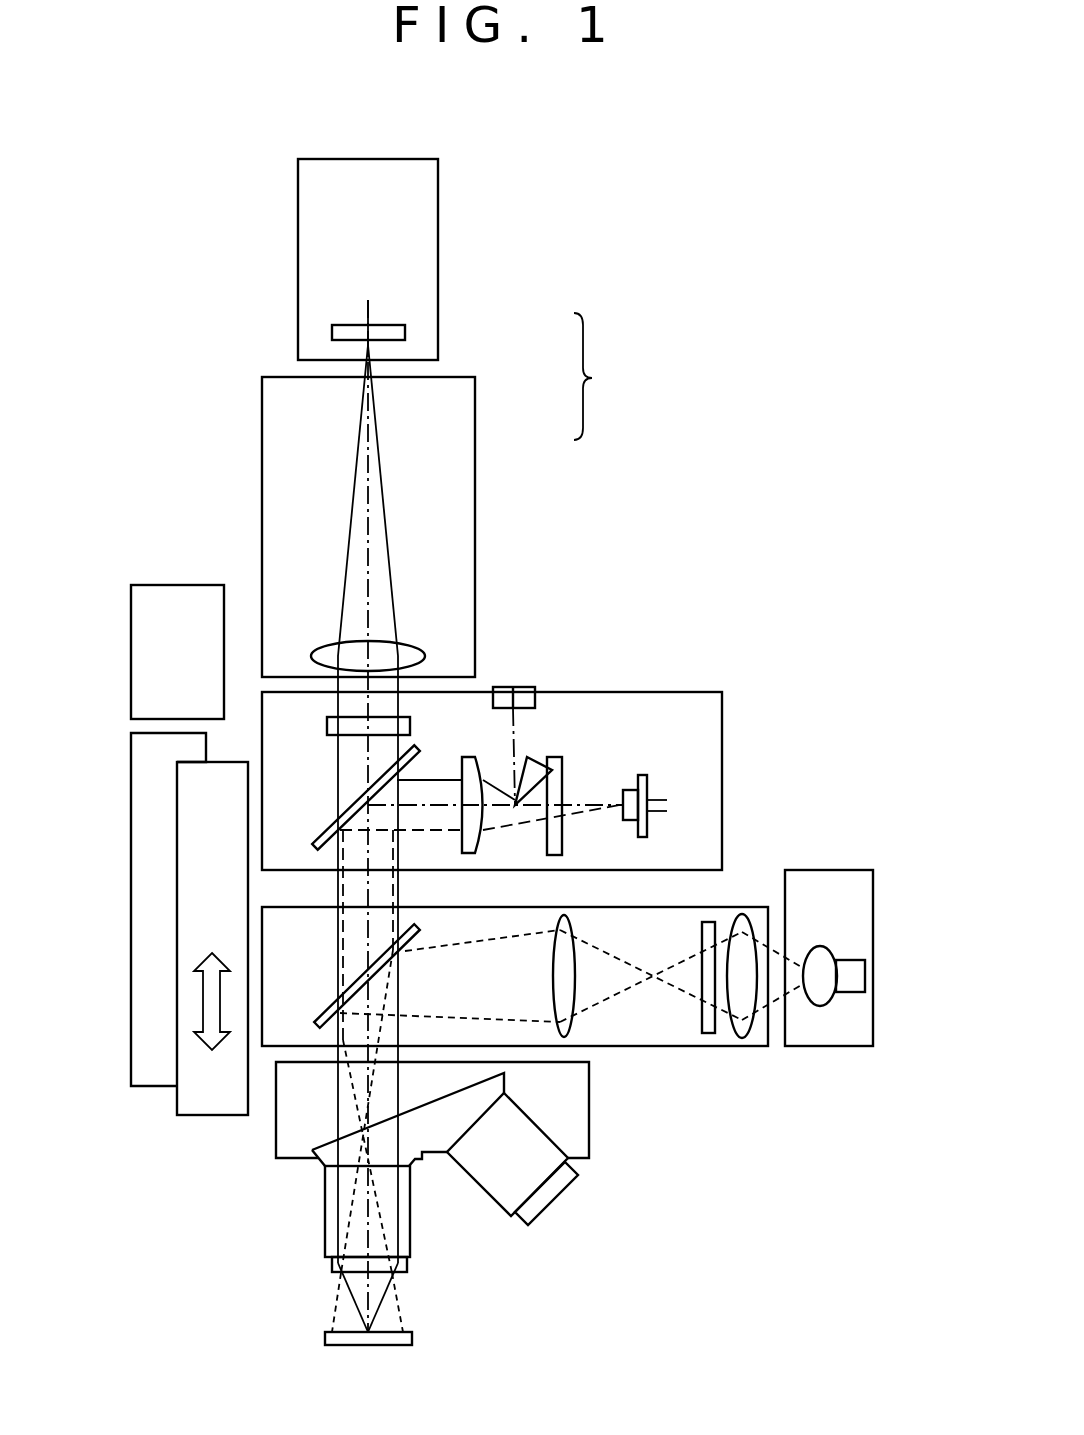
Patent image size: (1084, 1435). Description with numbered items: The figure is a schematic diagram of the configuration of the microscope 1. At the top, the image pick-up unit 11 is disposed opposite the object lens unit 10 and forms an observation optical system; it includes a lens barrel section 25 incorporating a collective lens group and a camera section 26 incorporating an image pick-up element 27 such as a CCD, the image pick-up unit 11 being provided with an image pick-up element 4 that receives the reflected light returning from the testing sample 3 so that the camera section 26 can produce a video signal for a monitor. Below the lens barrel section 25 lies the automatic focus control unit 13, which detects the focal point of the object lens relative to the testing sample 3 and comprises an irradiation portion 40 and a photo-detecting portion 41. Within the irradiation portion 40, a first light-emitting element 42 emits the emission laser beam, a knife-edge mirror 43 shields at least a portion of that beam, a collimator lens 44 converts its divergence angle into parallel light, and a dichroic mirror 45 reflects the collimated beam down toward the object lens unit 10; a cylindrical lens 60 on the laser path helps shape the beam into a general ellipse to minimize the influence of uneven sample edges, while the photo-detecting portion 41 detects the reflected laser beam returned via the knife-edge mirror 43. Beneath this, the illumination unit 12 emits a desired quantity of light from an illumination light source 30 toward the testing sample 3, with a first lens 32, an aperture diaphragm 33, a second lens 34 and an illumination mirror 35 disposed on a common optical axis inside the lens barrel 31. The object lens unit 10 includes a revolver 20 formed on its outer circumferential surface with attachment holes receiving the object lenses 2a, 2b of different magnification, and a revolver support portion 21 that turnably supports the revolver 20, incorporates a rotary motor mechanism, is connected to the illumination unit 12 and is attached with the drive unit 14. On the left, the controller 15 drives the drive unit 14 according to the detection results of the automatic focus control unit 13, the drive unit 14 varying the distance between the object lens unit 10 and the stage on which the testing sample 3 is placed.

The microscope 1 is at (604, 191).
The object lens 2a is at (410, 1245).
The object lens 2b is at (590, 1140).
The testing sample 3 is at (412, 1338).
The image pick-up element 4 is at (392, 325).
The object lens unit 10 is at (322, 1165).
The image pick-up unit 11 is at (608, 376).
The illumination unit 12 is at (753, 1047).
The automatic focus control unit 13 is at (534, 947).
The drive unit 14 is at (175, 1095).
The controller 15 is at (180, 604).
The revolver 20 is at (485, 1092).
The revolver support portion 21 is at (293, 1140).
The lens barrel section 25 is at (476, 425).
The camera section 26 is at (440, 342).
The image pick-up element 27 is at (342, 333).
The illumination light source 30 is at (818, 960).
The lens barrel 31 is at (708, 920).
The first lens 32 is at (748, 1027).
The aperture diaphragm 33 is at (742, 914).
The second lens 34 is at (562, 1007).
The illumination mirror 35 is at (317, 1020).
The irradiation portion 40 is at (670, 717).
The photo-detecting portion 41 is at (525, 684).
The first light-emitting element 42 is at (647, 780).
The knife-edge mirror 43 is at (535, 757).
The collimator lens 44 is at (468, 757).
The dichroic mirror 45 is at (315, 840).
The cylindrical lens 60 is at (560, 757).